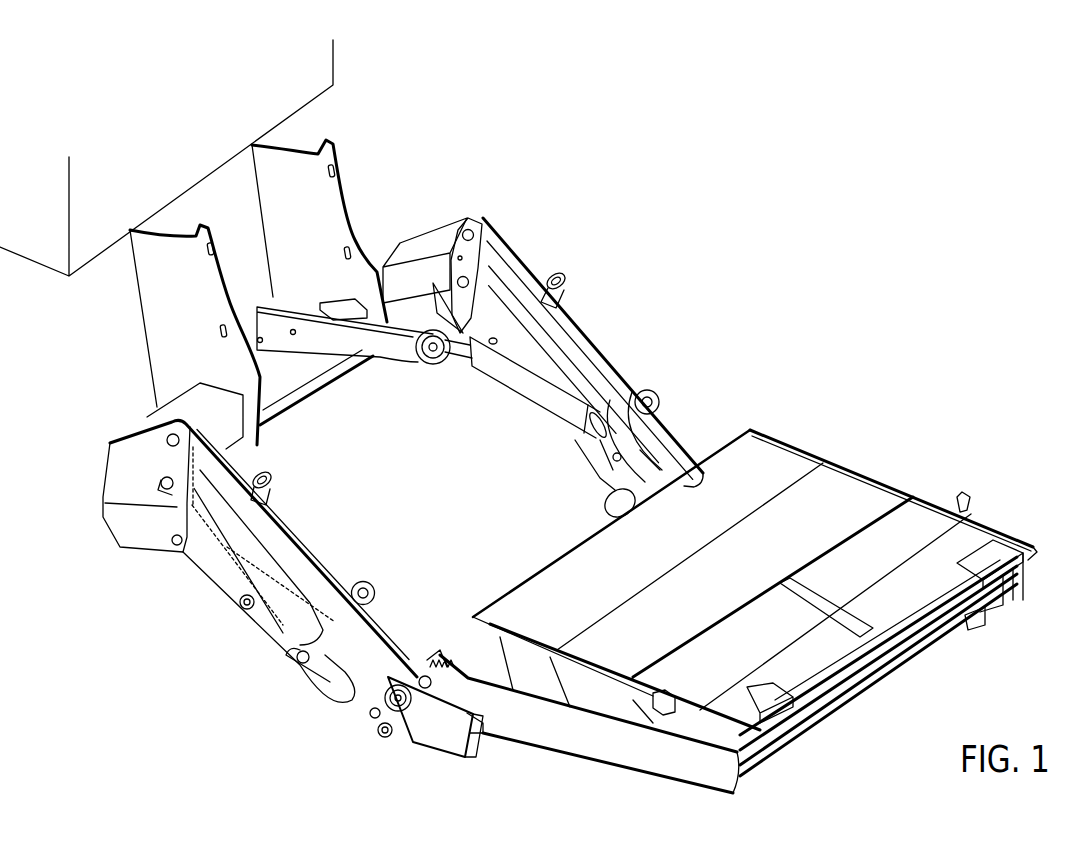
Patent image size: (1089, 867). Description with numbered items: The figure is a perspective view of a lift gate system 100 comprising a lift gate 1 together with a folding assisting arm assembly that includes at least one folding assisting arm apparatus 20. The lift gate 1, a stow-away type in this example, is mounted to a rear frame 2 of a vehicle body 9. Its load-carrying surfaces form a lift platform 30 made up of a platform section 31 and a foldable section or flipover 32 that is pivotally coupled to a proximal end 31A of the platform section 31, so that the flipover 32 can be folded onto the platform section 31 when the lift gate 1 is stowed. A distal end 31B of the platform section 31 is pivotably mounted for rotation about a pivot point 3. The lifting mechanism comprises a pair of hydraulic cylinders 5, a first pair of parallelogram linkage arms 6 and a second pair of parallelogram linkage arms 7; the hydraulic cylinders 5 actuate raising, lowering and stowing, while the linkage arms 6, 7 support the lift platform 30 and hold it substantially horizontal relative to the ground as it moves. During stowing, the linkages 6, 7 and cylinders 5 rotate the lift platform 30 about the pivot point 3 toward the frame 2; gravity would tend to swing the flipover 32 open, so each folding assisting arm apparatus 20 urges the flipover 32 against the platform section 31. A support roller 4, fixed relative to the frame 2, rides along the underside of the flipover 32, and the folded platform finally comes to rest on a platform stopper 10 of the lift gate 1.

The lift gate 1 is at (693, 233).
The lift gate system 100 is at (876, 287).
The vehicle body 9 is at (336, 70).
The rear frame 2 is at (333, 203).
The support roller 4 is at (423, 373).
The hydraulic cylinders 5 is at (523, 387).
The first pair of parallelogram linkage arms 6 is at (223, 583).
The second pair of parallelogram linkage arms 7 is at (563, 333).
The platform stopper 10 is at (565, 283).
The folding assisting arm apparatus 20 is at (654, 381).
The pivot point 3 is at (385, 720).
The lift platform 30 is at (921, 485).
The platform section 31 is at (550, 687).
The proximal end of the platform section 31A is at (873, 687).
The distal end of the platform section 31B is at (480, 652).
The foldable section (flipover) 32 is at (783, 457).